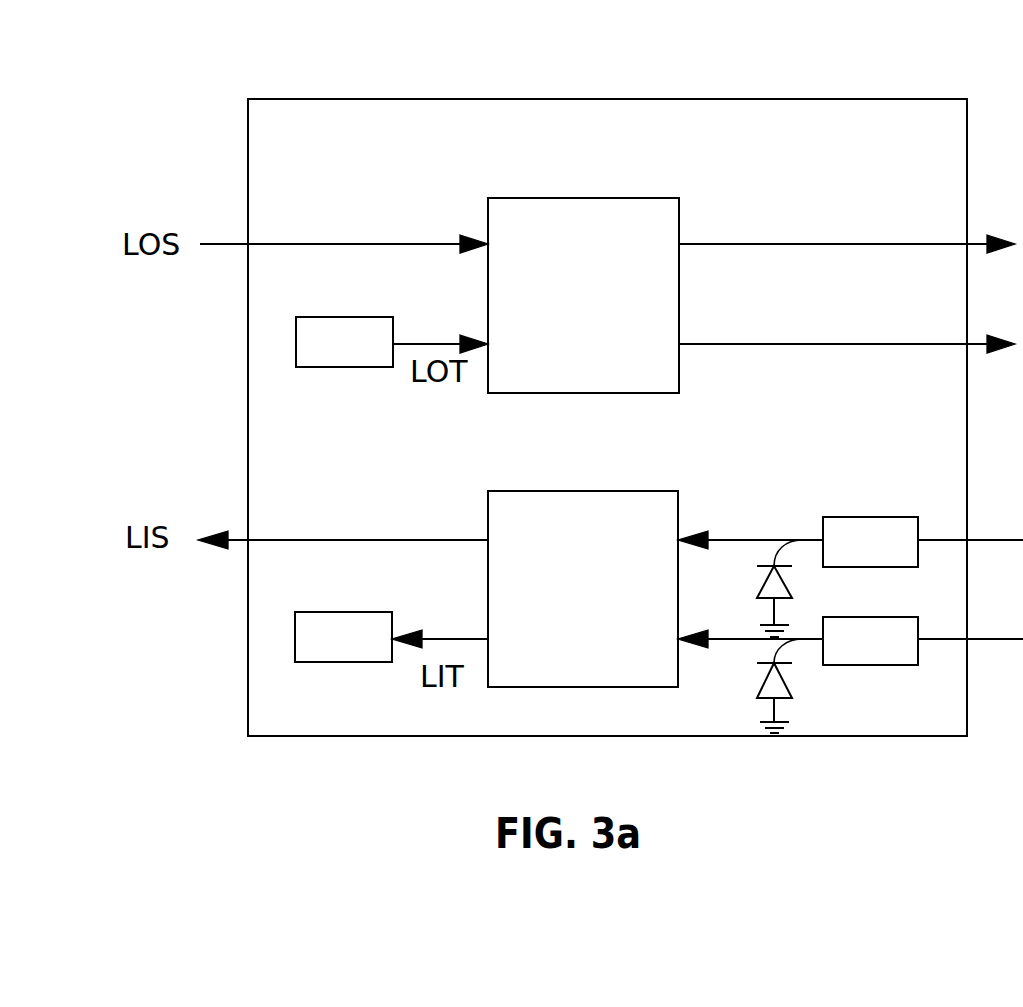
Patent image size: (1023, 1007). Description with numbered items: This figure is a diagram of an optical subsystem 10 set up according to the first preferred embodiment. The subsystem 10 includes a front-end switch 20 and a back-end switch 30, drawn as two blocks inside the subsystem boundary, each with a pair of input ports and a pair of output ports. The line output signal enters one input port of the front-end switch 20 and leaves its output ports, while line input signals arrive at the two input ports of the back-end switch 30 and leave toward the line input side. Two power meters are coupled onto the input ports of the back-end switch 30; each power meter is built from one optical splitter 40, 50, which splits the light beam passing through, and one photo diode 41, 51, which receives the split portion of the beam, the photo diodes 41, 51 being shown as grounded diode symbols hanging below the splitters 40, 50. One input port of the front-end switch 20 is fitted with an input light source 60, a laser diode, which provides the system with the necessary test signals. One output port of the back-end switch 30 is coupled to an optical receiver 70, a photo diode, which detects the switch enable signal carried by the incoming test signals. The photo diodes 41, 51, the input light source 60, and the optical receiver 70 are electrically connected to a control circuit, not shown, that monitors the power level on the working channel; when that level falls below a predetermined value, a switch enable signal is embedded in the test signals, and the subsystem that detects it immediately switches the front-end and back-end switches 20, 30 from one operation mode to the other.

The subsystem 10 is at (583, 98).
The front-end switch 20 is at (556, 197).
The back-end switch 30 is at (553, 491).
The optical splitter 40 is at (838, 517).
The photo diode 41 is at (793, 588).
The optical splitter 50 is at (877, 617).
The photo diode 51 is at (793, 686).
The input light source 60 is at (313, 317).
The optical receiver 70 is at (313, 612).